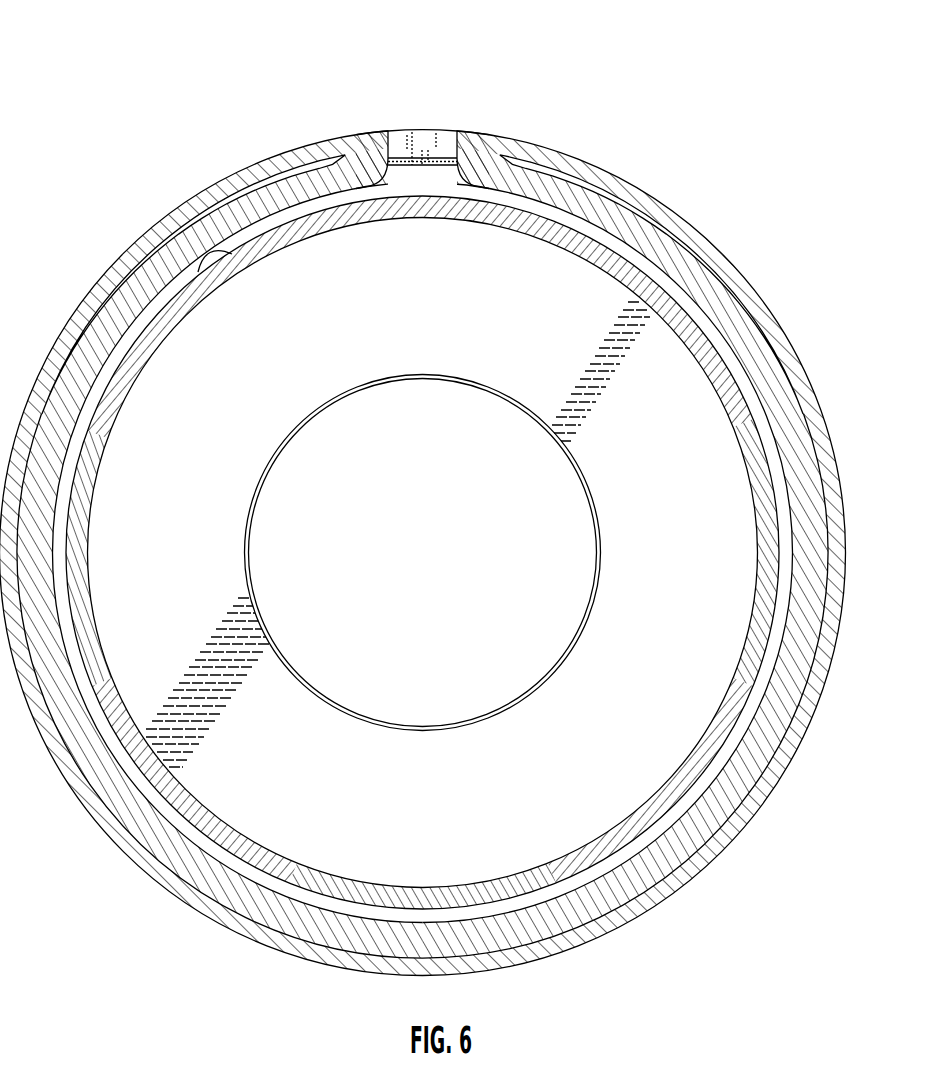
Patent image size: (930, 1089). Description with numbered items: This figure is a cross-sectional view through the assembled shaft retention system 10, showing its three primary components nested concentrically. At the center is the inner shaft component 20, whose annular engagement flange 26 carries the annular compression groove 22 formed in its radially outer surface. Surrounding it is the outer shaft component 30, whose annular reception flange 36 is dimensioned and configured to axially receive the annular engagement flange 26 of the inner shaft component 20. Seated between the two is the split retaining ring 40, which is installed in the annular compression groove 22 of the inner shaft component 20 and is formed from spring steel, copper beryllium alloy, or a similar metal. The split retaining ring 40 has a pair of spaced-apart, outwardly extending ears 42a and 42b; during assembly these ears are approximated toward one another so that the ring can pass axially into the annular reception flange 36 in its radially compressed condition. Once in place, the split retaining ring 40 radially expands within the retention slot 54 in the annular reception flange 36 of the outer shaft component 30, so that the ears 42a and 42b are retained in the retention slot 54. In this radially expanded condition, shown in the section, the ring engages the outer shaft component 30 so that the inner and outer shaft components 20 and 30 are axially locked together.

The shaft retention system 10 is at (87, 150).
The inner shaft component 20 is at (697, 353).
The annular compression groove 22 is at (240, 257).
The annular engagement flange 26 is at (350, 222).
The outer shaft component 30 is at (756, 292).
The annular reception flange 36 is at (236, 176).
The split retaining ring 40 is at (627, 218).
The outwardly extending ear 42a is at (378, 134).
The outwardly extending ear 42b is at (470, 134).
The retention slot 54 is at (438, 137).